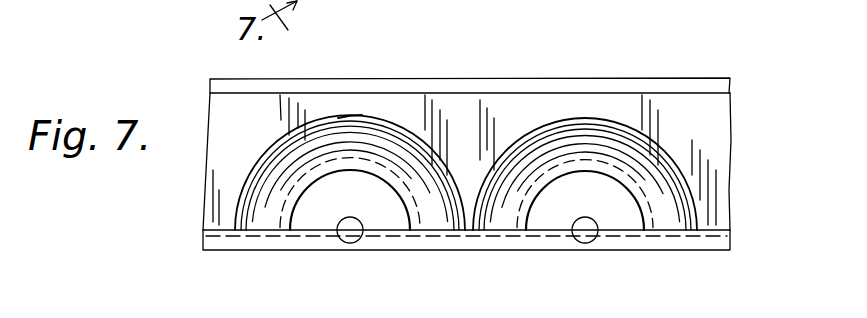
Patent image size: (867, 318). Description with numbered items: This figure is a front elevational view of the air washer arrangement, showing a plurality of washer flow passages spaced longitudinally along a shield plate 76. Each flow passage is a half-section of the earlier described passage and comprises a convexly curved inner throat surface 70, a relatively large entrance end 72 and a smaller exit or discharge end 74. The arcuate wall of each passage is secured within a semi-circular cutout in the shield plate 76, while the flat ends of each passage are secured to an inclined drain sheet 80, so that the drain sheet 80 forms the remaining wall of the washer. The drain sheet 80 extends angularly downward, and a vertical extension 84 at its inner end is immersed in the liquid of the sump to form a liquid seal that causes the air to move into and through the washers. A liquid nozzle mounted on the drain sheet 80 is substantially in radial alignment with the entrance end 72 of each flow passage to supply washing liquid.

The convexly curved inner throat surface 70 is at (650, 168).
The entrance end 72 is at (343, 118).
The exit or discharge end 74 is at (312, 182).
The shield plate 76 is at (478, 112).
The drain sheet 80 is at (713, 233).
The vertical extension 84 is at (471, 238).